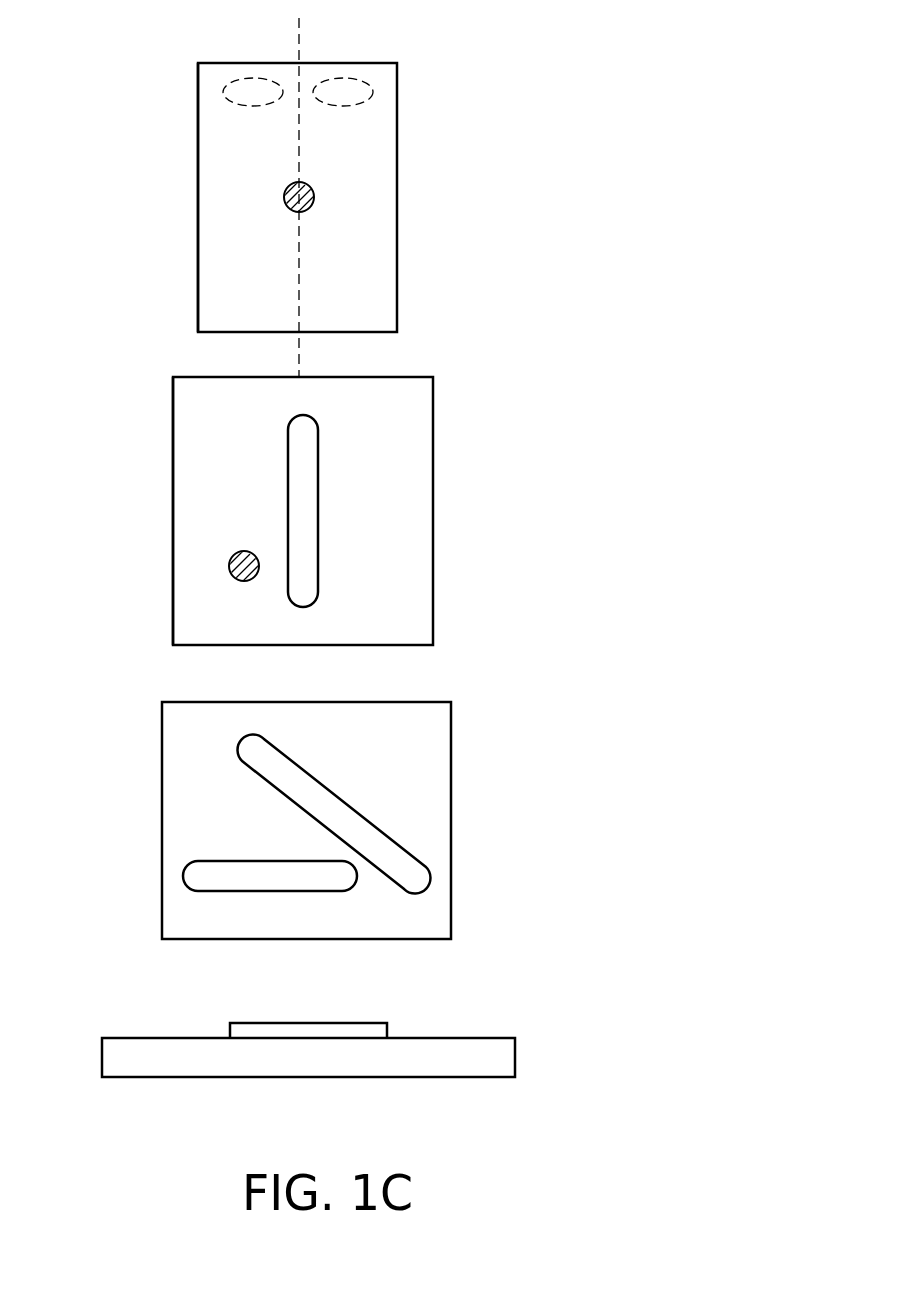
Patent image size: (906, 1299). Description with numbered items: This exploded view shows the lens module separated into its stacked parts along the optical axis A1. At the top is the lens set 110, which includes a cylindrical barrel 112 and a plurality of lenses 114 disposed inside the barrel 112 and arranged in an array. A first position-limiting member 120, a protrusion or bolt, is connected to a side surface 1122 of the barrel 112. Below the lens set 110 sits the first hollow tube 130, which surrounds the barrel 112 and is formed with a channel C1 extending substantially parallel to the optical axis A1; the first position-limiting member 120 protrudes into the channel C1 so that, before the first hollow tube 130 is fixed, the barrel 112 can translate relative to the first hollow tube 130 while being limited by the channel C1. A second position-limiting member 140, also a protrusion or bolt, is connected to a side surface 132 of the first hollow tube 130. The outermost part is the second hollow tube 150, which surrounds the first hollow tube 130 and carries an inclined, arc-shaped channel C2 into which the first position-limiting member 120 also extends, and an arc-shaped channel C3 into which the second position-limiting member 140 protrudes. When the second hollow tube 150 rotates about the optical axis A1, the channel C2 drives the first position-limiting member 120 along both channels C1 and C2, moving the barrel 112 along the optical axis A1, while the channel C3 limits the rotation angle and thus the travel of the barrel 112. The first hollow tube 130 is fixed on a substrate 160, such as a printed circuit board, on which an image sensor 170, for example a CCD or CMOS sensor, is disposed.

The optical axis A1 is at (302, 35).
The lens set 110 is at (220, 197).
The barrel 112 is at (233, 144).
The side surface 1122 is at (197, 274).
The lens 114 is at (224, 90).
The first position-limiting member 120 is at (285, 192).
The first hollow tube 130 is at (299, 511).
The side surface 132 is at (171, 452).
The channel C1 is at (290, 470).
The second position-limiting member 140 is at (230, 558).
The second hollow tube 150 is at (301, 820).
The channel C2 is at (399, 844).
The channel C3 is at (226, 863).
The substrate 160 is at (492, 1055).
The image sensor 170 is at (373, 1029).